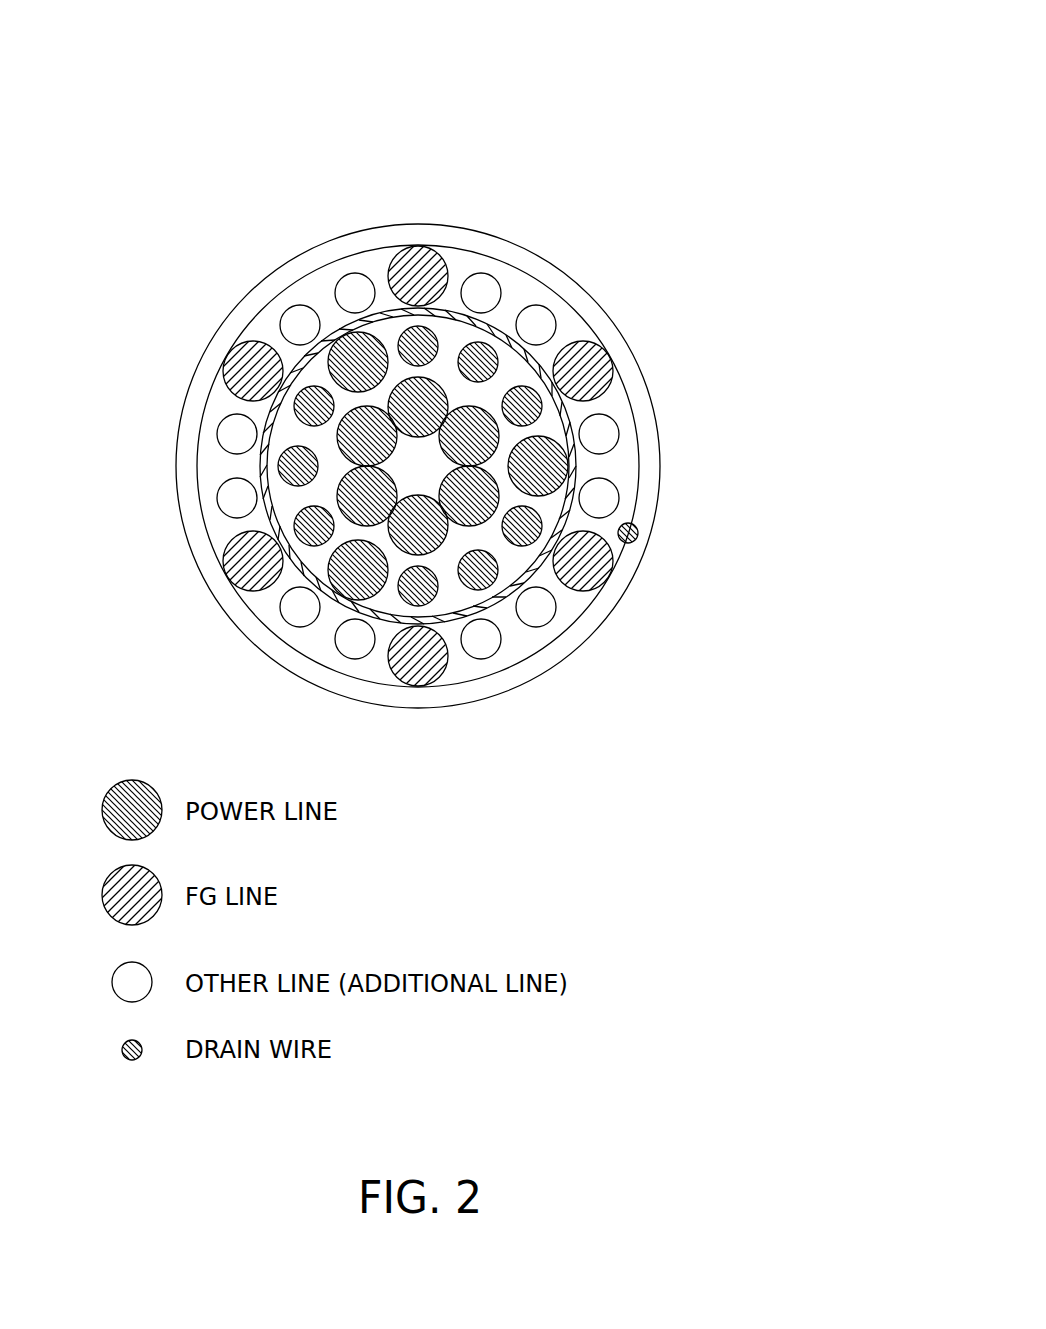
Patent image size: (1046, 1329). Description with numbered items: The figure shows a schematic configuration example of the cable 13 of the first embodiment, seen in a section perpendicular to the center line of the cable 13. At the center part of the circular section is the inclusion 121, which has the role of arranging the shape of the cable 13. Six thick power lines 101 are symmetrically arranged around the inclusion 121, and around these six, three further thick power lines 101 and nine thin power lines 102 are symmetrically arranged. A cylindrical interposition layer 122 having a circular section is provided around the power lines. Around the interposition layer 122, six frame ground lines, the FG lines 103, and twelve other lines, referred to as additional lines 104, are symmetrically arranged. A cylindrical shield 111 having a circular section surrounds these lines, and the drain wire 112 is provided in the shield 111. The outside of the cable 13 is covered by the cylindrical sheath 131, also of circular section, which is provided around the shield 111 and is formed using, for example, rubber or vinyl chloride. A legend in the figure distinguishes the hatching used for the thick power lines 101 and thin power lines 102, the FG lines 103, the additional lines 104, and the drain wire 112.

The cable 13 is at (578, 104).
The thick power line 101 is at (367, 343).
The thin power line 102 is at (487, 358).
The frame ground line (FG line) 103 is at (593, 370).
The additional line 104 is at (355, 285).
The shield 111 is at (622, 557).
The drain wire 112 is at (637, 528).
The inclusion 121 is at (408, 465).
The interposition layer 122 is at (575, 463).
The sheath 131 is at (622, 332).